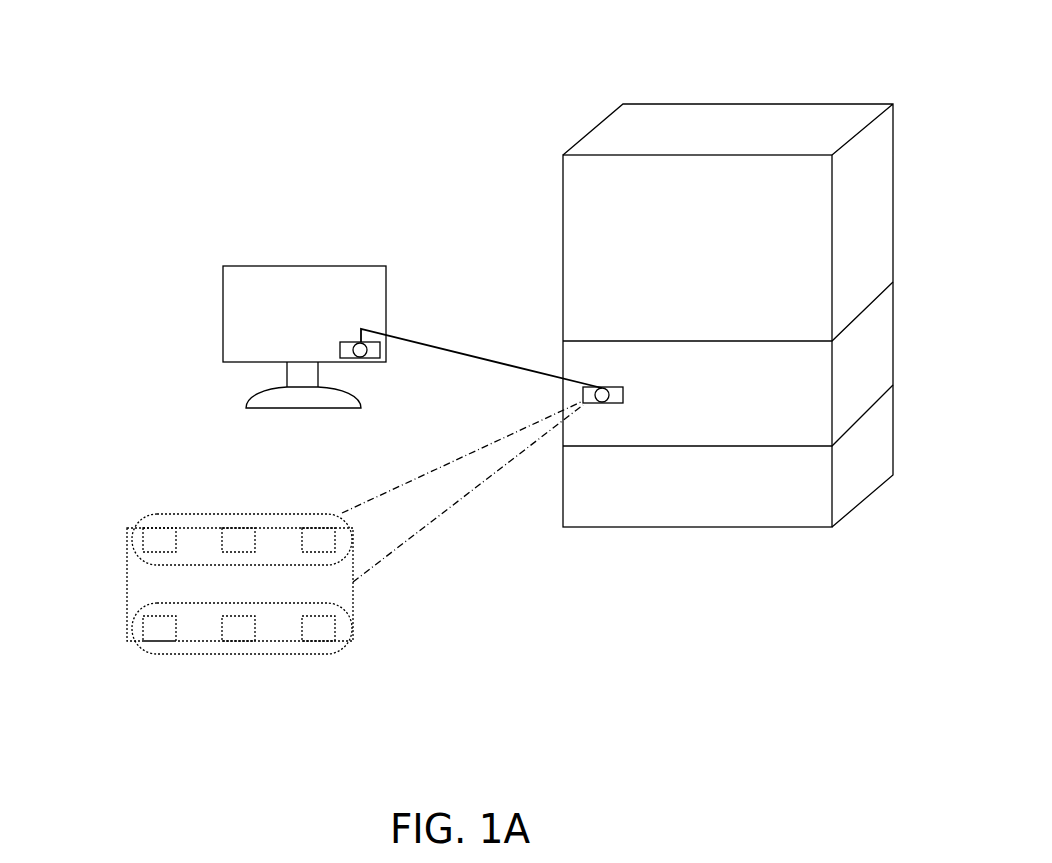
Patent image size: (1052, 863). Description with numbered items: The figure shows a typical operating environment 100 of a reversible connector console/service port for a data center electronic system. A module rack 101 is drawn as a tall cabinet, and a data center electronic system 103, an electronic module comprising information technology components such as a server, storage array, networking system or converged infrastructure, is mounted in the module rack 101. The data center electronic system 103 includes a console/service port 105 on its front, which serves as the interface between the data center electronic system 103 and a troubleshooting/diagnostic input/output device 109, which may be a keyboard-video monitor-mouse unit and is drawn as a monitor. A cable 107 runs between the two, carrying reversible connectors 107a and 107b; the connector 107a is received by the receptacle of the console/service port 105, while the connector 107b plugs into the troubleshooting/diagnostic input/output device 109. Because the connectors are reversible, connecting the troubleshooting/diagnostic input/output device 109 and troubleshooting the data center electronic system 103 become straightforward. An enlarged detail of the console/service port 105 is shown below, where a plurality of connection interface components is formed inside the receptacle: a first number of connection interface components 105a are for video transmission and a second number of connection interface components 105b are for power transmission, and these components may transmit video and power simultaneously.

The typical operating environment 100 is at (95, 43).
The module rack 101 is at (887, 147).
The data center electronic system 103 is at (887, 313).
The console/service port 105 is at (600, 388).
The connection interface components 105a is at (209, 513).
The connection interface components 105b is at (242, 654).
The cable 107 is at (476, 354).
The connector 107a is at (600, 403).
The connector 107b is at (360, 358).
The troubleshooting/diagnostic input/output device 109 is at (237, 266).